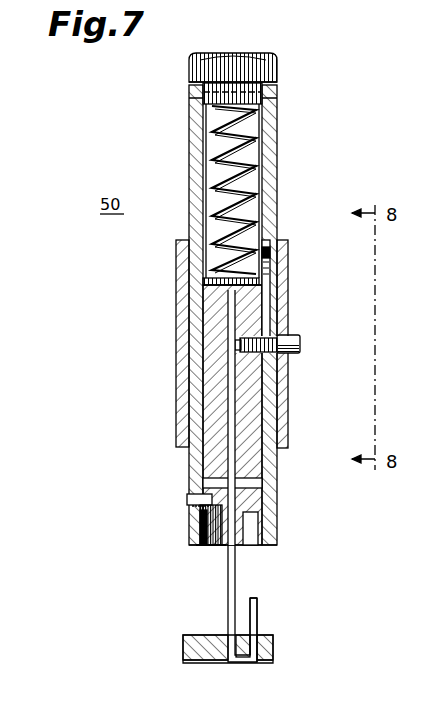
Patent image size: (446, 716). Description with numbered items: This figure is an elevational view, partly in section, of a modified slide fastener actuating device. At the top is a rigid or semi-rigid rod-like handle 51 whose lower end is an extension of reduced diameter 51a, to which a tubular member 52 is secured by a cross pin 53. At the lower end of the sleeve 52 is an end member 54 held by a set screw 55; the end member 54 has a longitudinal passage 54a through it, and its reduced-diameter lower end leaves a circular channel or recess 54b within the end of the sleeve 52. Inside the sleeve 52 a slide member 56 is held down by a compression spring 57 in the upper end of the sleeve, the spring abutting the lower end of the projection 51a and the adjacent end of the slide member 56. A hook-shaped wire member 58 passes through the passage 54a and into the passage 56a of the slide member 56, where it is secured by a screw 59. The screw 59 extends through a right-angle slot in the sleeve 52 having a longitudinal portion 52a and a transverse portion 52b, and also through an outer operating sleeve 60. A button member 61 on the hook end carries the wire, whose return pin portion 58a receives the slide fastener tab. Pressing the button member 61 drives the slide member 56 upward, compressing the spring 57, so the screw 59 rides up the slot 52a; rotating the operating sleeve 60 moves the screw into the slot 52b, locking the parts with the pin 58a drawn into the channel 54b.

The handle 51 is at (278, 68).
The extension of reduced diameter 51a is at (189, 92).
The tubular member 52 is at (190, 160).
The longitudinal portion 52a is at (268, 300).
The transverse portion 52b is at (281, 262).
The cross pin 53 is at (277, 95).
The end member 54 is at (200, 520).
The longitudinal passage 54a is at (201, 540).
The circular channel or recess 54b is at (206, 548).
The set screw 55 is at (189, 498).
The slide member 56 is at (212, 455).
The passage 56a is at (210, 300).
The compression spring 57 is at (214, 188).
The wire member 58 is at (227, 593).
The pin portion 58a is at (258, 612).
The screw 59 is at (290, 340).
The outer operating sleeve 60 is at (283, 410).
The button member 61 is at (183, 641).